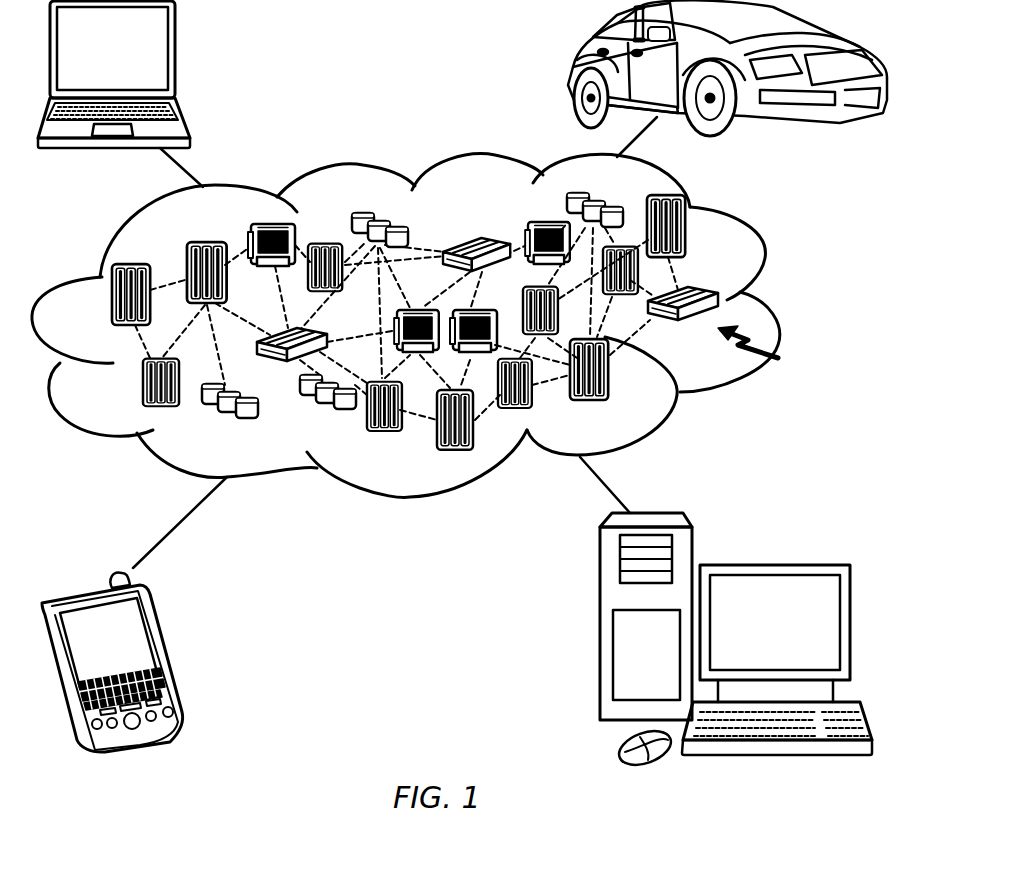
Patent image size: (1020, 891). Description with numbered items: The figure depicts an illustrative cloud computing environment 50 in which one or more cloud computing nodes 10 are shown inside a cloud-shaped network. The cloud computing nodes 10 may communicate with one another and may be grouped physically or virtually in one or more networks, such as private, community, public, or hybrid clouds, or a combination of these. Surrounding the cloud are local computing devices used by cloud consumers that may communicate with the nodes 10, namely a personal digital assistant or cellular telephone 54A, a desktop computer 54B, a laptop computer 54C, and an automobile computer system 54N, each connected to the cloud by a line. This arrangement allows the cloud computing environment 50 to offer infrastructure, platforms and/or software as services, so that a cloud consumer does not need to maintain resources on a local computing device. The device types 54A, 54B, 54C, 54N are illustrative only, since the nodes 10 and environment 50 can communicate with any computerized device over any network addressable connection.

The cloud computing nodes 10 is at (764, 348).
The cloud computing environment 50 is at (773, 300).
The personal digital assistant (PDA) or cellular telephone 54A is at (165, 648).
The desktop computer 54B is at (772, 565).
The laptop computer 54C is at (176, 53).
The automobile computer system 54N is at (575, 67).